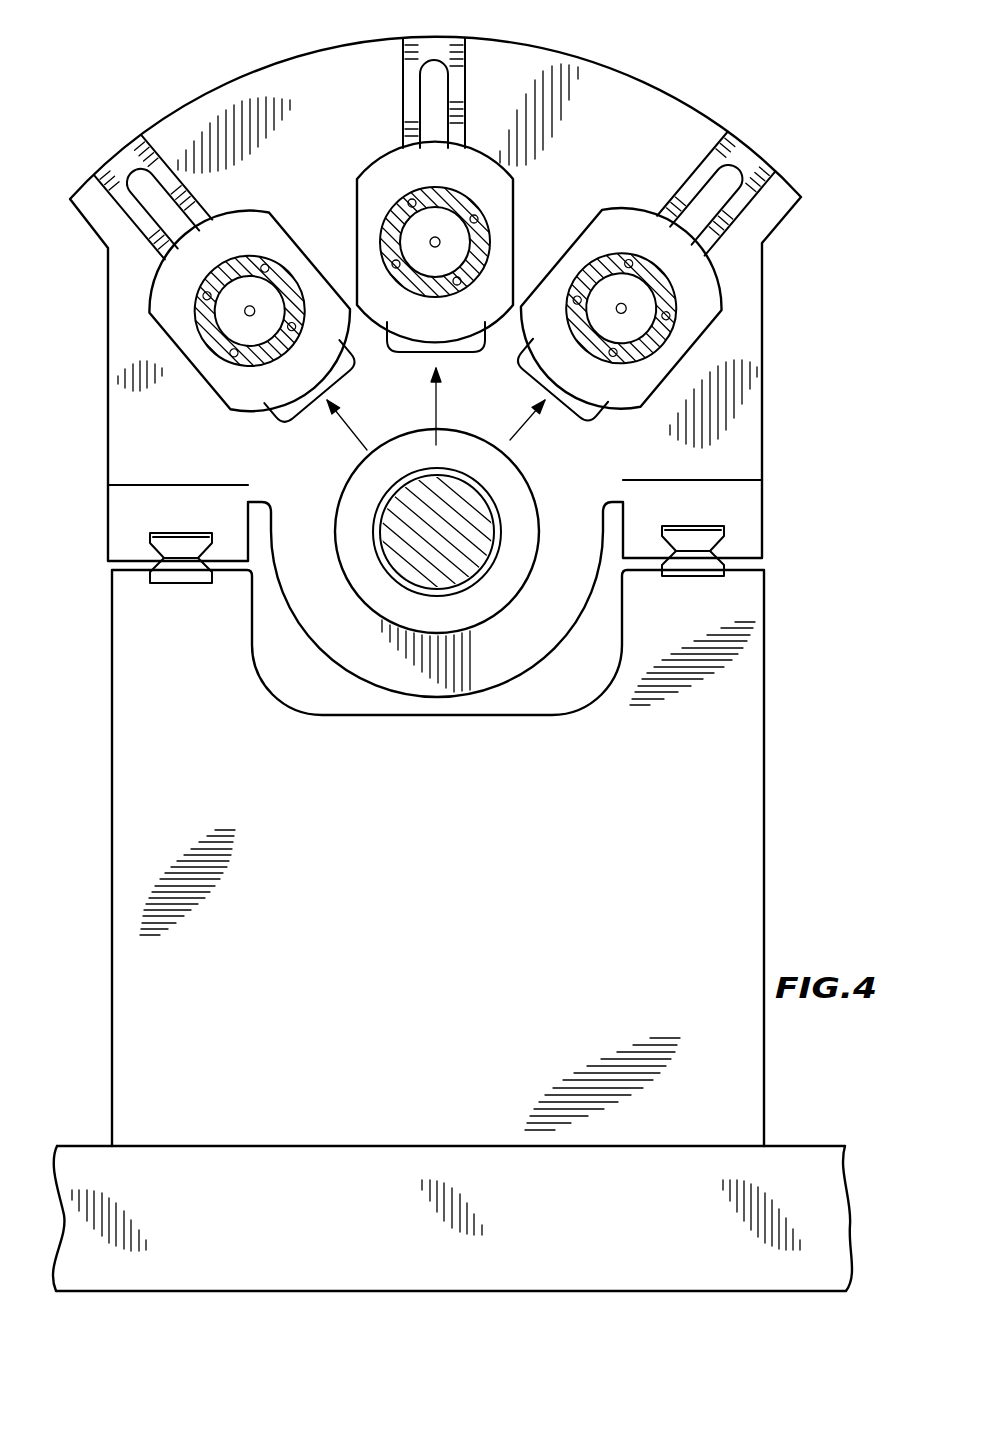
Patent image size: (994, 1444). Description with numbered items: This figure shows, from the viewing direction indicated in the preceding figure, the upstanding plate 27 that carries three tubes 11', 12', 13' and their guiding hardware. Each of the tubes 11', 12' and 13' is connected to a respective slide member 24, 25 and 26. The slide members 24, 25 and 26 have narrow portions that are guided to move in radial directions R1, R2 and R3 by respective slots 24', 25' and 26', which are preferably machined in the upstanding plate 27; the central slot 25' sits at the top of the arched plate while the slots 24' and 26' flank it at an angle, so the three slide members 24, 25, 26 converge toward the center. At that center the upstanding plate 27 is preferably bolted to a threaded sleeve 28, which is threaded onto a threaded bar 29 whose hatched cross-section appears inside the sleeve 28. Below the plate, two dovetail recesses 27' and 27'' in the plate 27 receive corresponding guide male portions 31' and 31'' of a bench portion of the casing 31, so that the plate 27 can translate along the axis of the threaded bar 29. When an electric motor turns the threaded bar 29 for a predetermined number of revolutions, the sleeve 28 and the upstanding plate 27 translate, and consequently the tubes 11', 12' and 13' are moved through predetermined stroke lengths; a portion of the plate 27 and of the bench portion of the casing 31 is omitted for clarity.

The tube 11' is at (249, 340).
The tube 12' is at (461, 241).
The tube 13' is at (621, 321).
The slide member 24 is at (252, 298).
The slot 24' is at (153, 164).
The slide member 25 is at (435, 230).
The slot 25' is at (406, 93).
The slide member 26 is at (618, 311).
The slot 26' is at (733, 178).
The upstanding plate 27 is at (435, 367).
The dovetail recess 27' is at (171, 499).
The dovetail recess 27'' is at (742, 515).
The threaded sleeve 28 is at (452, 615).
The threaded bar 29 is at (383, 525).
The casing 31 is at (452, 930).
The guide male portion 31' is at (181, 596).
The guide male portion 31'' is at (742, 570).
The radial direction R1 is at (345, 430).
The radial direction R2 is at (437, 400).
The radial direction R3 is at (518, 432).